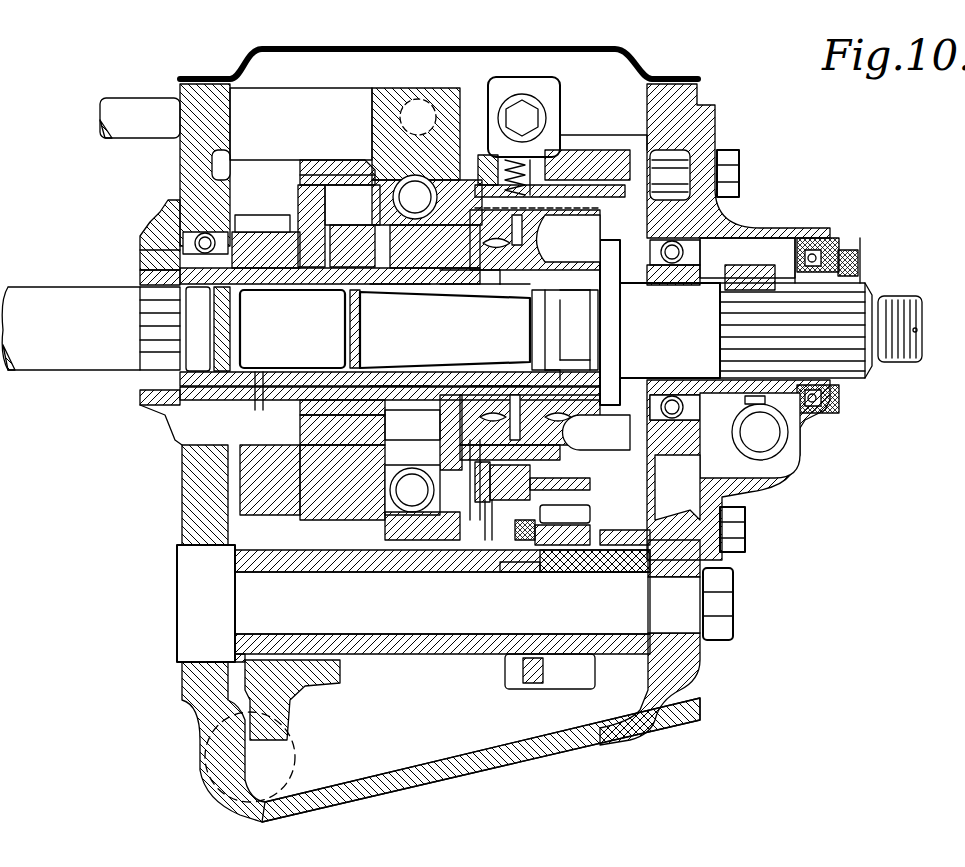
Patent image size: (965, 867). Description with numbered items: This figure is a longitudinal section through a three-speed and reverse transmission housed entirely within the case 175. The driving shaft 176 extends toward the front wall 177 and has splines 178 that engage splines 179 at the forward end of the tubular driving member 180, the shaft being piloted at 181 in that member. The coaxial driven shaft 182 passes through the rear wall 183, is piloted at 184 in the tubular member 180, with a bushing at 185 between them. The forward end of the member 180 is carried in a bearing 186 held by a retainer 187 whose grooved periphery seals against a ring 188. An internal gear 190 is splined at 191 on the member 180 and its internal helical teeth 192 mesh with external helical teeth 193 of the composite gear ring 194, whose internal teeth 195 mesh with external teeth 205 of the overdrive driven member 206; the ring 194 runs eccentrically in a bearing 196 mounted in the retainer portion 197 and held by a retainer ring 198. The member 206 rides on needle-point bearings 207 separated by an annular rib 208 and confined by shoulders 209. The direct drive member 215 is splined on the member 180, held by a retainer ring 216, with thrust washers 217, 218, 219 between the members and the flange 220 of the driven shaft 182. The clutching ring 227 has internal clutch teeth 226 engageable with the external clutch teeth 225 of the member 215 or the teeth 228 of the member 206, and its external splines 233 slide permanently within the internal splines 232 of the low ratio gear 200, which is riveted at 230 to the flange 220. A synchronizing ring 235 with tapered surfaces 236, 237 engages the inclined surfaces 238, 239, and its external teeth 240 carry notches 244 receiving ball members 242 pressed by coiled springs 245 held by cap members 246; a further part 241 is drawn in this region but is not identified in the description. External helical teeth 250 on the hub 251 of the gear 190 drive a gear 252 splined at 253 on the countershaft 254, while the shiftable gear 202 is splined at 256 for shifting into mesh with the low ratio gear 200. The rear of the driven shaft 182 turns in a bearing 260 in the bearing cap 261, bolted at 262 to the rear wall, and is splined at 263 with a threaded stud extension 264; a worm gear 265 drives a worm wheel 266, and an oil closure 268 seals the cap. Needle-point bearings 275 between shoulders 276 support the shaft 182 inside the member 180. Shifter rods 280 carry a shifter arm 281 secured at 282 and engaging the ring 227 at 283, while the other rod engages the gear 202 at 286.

The case 175 is at (482, 765).
The driving shaft 176 is at (45, 296).
The front wall 177 is at (182, 483).
The ribs or splines 178 is at (150, 305).
The slots or splines 179 is at (150, 278).
The tubular driving member 180 is at (292, 329).
The pilot 181 is at (190, 320).
The driven shaft 182 is at (448, 326).
The rear wall 183 is at (690, 662).
The pilot 184 is at (352, 322).
The bushing 185 is at (292, 370).
The bearing 186 is at (165, 228).
The retainer 187 is at (145, 252).
The ring 188 is at (140, 398).
The internal gear 190 is at (322, 185).
The spline 191 is at (268, 282).
The internal helical teeth 192 is at (355, 185).
The external helical teeth 193 is at (300, 210).
The external internal or composite gear ring 194 is at (365, 225).
The internal helical teeth 195 is at (395, 432).
The bearing 196 is at (337, 158).
The bearing retainer portion 197 is at (395, 95).
The retainer ring 198 is at (445, 185).
The low ratio gear 200 is at (612, 160).
The shiftable gear 202 is at (548, 688).
The external helical teeth 205 is at (395, 414).
The overdrive driven member 206 is at (480, 282).
The needle-point bearings 207 is at (377, 282).
The external annular rib 208 is at (452, 282).
The shoulders 209 is at (382, 378).
The direct drive driven member 215 is at (512, 282).
The retainer ring 216 is at (568, 368).
The thrust washer 217 is at (548, 380).
The thrust washer 218 is at (470, 298).
The thrust washer 219 is at (580, 294).
The flange 220 is at (608, 342).
The external clutch teeth 225 is at (642, 192).
The internal clutch teeth 226 is at (543, 177).
The clutching ring 227 is at (560, 160).
The external clutch teeth 228 is at (413, 425).
The rivets 230 is at (650, 470).
The internal splines 232 is at (642, 172).
The external splines 233 is at (578, 170).
The synchronizing ring 235 is at (535, 240).
The tapered surface 236 is at (472, 505).
The tapered surface 237 is at (559, 500).
The inclined surface 238 is at (480, 432).
The inclined surface 239 is at (585, 429).
The external clutch teeth 240 is at (492, 518).
The member 241 is at (575, 522).
The spring-pressed ball members 242 is at (537, 201).
The notches 244 is at (550, 198).
The coiled springs 245 is at (515, 185).
The cap members 246 is at (500, 108).
The external helical teeth 250 is at (182, 200).
The hub 251 is at (258, 245).
The gear 252 is at (352, 505).
The spline 253 is at (295, 565).
The countershaft 254 is at (405, 655).
The spline 256 is at (566, 572).
The bearing 260 is at (688, 250).
The bearing cap 261 is at (770, 228).
The bolts 262 is at (738, 143).
The splines 263 is at (842, 312).
The threaded stud extension 264 is at (900, 322).
The worm gear 265 is at (745, 402).
The worm wheel 266 is at (755, 440).
The oil closure means 268 is at (862, 242).
The needle-point bearings 275 is at (567, 330).
The annular shoulders 276 is at (538, 320).
The shifter rods 280 is at (301, 124).
The shifter arm 281 is at (529, 78).
The securing point 282 is at (516, 98).
The shifting engagement 283 is at (485, 168).
The shifting engagement 286 is at (525, 575).